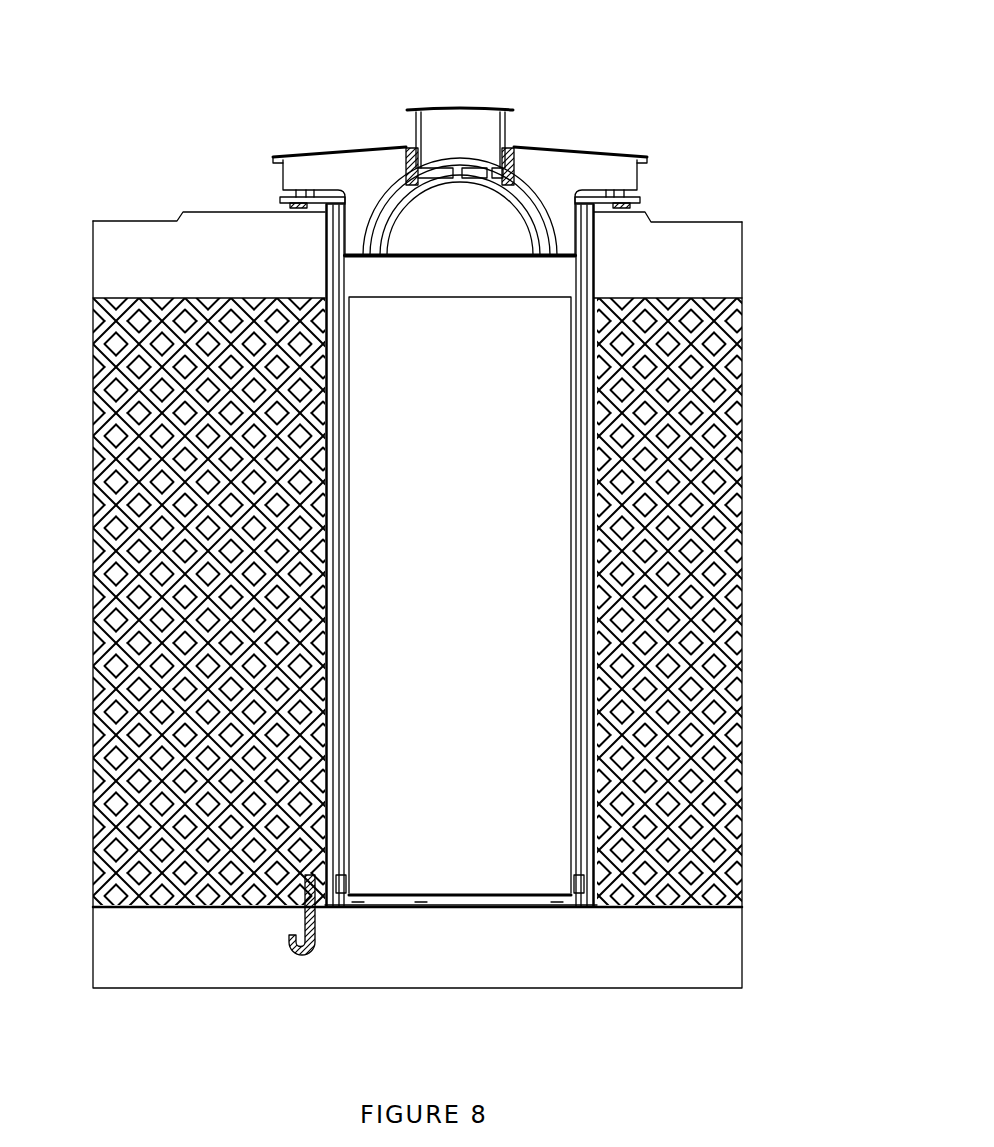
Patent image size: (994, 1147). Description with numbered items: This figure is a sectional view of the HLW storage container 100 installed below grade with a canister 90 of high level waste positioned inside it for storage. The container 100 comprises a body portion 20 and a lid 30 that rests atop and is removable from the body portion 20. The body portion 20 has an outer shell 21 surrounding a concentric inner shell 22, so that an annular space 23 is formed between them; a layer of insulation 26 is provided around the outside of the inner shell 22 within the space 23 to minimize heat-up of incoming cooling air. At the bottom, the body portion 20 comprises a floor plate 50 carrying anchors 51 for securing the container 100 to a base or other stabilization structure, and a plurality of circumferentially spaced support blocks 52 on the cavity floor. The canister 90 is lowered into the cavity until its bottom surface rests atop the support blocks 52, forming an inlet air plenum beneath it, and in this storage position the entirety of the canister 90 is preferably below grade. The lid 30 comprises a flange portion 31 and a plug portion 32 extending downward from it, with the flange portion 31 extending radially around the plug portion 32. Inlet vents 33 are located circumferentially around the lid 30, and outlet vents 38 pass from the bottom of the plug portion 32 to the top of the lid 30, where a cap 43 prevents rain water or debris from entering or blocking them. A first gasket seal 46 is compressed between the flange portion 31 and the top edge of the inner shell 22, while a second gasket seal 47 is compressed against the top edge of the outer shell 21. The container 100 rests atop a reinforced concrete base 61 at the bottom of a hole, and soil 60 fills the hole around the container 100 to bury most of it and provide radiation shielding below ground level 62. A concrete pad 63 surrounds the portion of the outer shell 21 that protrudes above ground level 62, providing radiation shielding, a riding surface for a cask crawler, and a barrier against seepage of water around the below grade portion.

The HLW storage container 100 is at (677, 80).
The body portion 20 is at (427, 532).
The outer shell 21 is at (597, 455).
The inner shell 22 is at (343, 375).
The space 23 is at (597, 358).
The layer of insulation 26 is at (580, 228).
The lid 30 is at (459, 183).
The flange portion 31 is at (620, 160).
The plug portion 32 is at (473, 233).
The inlet vents 33 is at (318, 197).
The outlet vents 38 is at (382, 185).
The cap 43 is at (454, 103).
The first gasket seal 46 is at (395, 203).
The second gasket seal 47 is at (322, 237).
The floor plate 50 is at (617, 893).
The anchors 51 is at (300, 945).
The support blocks 52 is at (358, 907).
The soil 60 is at (742, 530).
The base 61 is at (733, 955).
The ground level 62 is at (712, 296).
The concrete pad 63 is at (720, 237).
The canister 90 is at (449, 664).